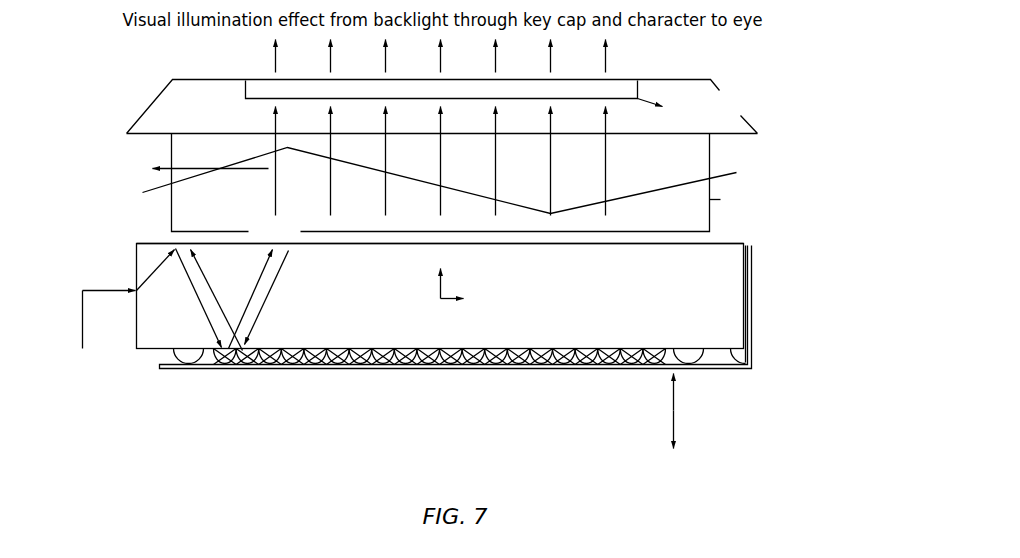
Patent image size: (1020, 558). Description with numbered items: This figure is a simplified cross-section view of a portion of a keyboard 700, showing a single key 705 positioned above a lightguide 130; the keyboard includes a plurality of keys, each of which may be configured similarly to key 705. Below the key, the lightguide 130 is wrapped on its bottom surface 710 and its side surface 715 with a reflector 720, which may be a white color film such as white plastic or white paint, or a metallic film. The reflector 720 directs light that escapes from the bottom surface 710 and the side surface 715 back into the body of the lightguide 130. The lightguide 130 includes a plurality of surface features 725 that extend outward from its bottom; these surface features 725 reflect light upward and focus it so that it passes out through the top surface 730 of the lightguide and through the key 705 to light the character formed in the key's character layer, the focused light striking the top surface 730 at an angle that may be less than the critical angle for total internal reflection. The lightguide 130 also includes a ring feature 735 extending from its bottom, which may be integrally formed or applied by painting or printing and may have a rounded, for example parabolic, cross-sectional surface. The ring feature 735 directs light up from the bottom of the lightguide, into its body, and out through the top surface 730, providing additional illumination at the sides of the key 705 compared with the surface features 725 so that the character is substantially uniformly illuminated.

The keyboard 700 is at (833, 430).
The key 705 is at (801, 82).
The bottom surface 710 is at (733, 353).
The side surface 715 is at (745, 315).
The reflector 720 is at (755, 290).
The surface features 725 is at (258, 366).
The top surface 730 is at (723, 243).
The ring feature 735 is at (190, 365).
The lightguide 130 is at (716, 282).